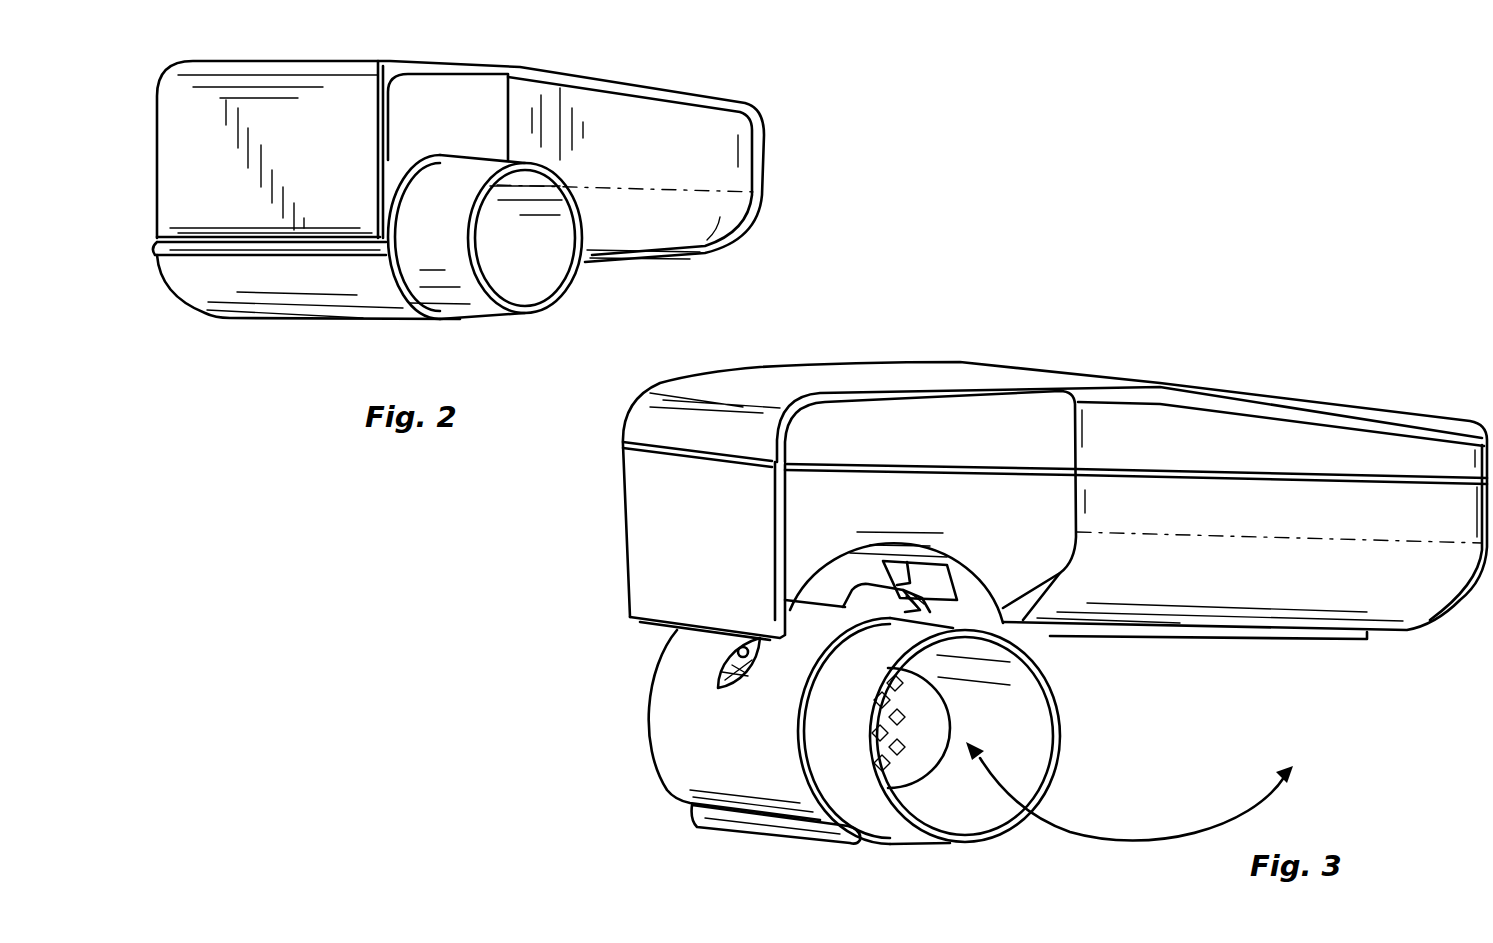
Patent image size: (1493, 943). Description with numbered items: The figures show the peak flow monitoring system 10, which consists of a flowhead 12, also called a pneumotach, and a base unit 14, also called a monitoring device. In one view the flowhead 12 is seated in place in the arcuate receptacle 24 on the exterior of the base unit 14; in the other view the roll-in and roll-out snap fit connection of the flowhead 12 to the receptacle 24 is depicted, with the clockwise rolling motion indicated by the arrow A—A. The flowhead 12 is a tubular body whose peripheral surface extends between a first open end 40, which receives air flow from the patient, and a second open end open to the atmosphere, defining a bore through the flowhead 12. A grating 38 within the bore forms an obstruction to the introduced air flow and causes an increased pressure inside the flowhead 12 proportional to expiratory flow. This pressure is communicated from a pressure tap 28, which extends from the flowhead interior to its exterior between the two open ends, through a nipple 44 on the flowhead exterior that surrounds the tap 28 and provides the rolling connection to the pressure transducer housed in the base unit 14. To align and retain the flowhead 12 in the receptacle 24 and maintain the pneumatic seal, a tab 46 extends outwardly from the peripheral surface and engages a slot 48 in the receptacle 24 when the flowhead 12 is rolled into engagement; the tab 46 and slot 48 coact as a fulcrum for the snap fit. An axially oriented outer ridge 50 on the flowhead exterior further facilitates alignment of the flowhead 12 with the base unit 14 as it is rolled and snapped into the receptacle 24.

In FIG. 2, the peak flow monitoring system 10 is at (786, 170).
In FIG. 3, the peak flow monitoring system 10 is at (1185, 365).
In FIG. 2, the flowhead 12 is at (380, 292).
In FIG. 3, the flowhead 12 is at (690, 730).
In FIG. 2, the base unit 14 is at (640, 217).
In FIG. 3, the base unit 14 is at (995, 417).
In FIG. 3, the receptacle 24 is at (822, 578).
In FIG. 3, the pressure tap 28 is at (747, 640).
In FIG. 3, the grating 38 is at (905, 732).
In FIG. 2, the first open end 40 is at (518, 266).
In FIG. 3, the nipple 44 is at (720, 670).
In FIG. 3, the tab 46 is at (875, 598).
In FIG. 3, the slot 48 is at (930, 574).
In FIG. 2, the outer ridge 50 is at (156, 252).
In FIG. 3, the outer ridge 50 is at (693, 812).